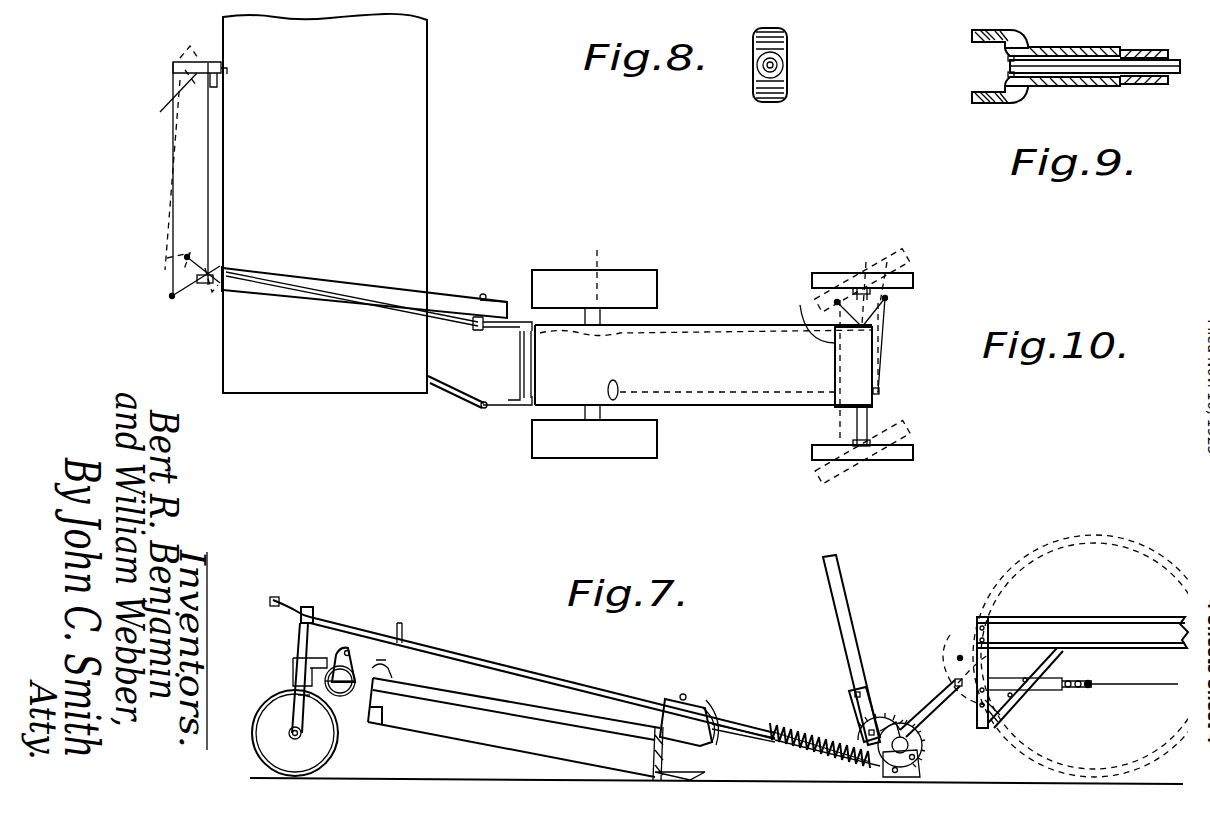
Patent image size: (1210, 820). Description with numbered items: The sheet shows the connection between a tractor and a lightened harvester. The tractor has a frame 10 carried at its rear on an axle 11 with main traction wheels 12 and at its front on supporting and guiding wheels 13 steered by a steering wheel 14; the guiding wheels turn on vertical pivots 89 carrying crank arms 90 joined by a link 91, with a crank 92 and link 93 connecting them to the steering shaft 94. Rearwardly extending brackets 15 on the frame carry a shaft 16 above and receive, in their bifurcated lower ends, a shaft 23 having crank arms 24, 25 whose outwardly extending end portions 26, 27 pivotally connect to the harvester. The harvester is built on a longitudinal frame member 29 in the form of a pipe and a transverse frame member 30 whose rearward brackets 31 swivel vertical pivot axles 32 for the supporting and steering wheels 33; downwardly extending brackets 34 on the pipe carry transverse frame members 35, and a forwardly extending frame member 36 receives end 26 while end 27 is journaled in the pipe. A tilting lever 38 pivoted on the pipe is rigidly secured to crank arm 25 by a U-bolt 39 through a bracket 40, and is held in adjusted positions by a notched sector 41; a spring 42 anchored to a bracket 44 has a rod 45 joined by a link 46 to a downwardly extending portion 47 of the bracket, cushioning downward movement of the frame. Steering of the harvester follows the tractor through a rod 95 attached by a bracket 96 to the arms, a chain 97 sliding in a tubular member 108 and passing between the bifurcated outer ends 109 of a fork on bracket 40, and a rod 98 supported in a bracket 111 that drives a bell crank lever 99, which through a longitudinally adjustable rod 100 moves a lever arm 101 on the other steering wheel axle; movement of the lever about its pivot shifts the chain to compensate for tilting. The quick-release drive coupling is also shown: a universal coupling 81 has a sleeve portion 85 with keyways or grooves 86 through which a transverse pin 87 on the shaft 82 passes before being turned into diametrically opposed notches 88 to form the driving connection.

In FIG. 10, the frame 10 is at (760, 408).
In FIG. 7, the frame 10 is at (1120, 632).
In FIG. 10, the axle 11 is at (595, 425).
In FIG. 10, the main traction wheels 12 is at (632, 275).
In FIG. 7, the main traction wheels 12 is at (1035, 562).
In FIG. 10, the supporting and guiding wheels 13 is at (905, 281).
In FIG. 10, the steering wheel 14 is at (618, 395).
In FIG. 10, the brackets 15 is at (525, 333).
In FIG. 7, the brackets 15 is at (952, 642).
In FIG. 7, the shaft 16 is at (961, 655).
In FIG. 10, the shaft 23 is at (523, 362).
In FIG. 7, the shaft 23 is at (960, 684).
In FIG. 10, the crank arm 24 is at (521, 403).
In FIG. 10, the crank arm 25 is at (485, 344).
In FIG. 7, the crank arm 25 is at (955, 682).
In FIG. 10, the outwardly extending end portion 26 is at (482, 407).
In FIG. 10, the outwardly extending end portion 27 is at (484, 295).
In FIG. 10, the longitudinal frame member 29 is at (472, 300).
In FIG. 7, the longitudinal frame member 29 is at (748, 727).
In FIG. 10, the transverse frame member 30 is at (208, 150).
In FIG. 7, the transverse frame member 30 is at (346, 650).
In FIG. 7, the brackets 31 is at (293, 660).
In FIG. 10, the vertical pivot axles 32 is at (170, 112).
In FIG. 7, the vertical pivot axles 32 is at (300, 637).
In FIG. 10, the supporting and steering wheels 33 is at (195, 72).
In FIG. 7, the supporting and steering wheels 33 is at (340, 741).
In FIG. 7, the brackets 34 is at (378, 664).
In FIG. 7, the transverse frame members 35 is at (325, 686).
In FIG. 10, the frame member 36 is at (450, 396).
In FIG. 10, the tilting lever 38 is at (508, 303).
In FIG. 7, the tilting lever 38 is at (838, 590).
In FIG. 7, the U-bolt 39 is at (915, 733).
In FIG. 7, the bracket 40 is at (896, 728).
In FIG. 7, the notched sector 41 is at (868, 690).
In FIG. 7, the spring 42 is at (800, 730).
In FIG. 7, the bracket 44 is at (710, 714).
In FIG. 7, the rod 45 is at (875, 767).
In FIG. 7, the link 46 is at (921, 776).
In FIG. 7, the downwardly extending portion 47 is at (922, 750).
In FIG. 8, the universal coupling 81 is at (766, 102).
In FIG. 9, the universal coupling 81 is at (975, 100).
In FIG. 8, the shaft 82 is at (782, 68).
In FIG. 9, the shaft 82 is at (1155, 82).
In FIG. 9, the sleeve portion 85 is at (1100, 50).
In FIG. 8, the keyways or grooves 86 is at (782, 48).
In FIG. 9, the keyways or grooves 86 is at (1060, 75).
In FIG. 8, the transverse pin 87 is at (758, 70).
In FIG. 9, the transverse pin 87 is at (1008, 58).
In FIG. 8, the notches 88 is at (776, 62).
In FIG. 10, the vertical pivots 89 is at (862, 288).
In FIG. 10, the crank arms 90 is at (855, 290).
In FIG. 10, the link 91 is at (802, 312).
In FIG. 10, the crank 92 is at (880, 300).
In FIG. 10, the link 93 is at (880, 345).
In FIG. 10, the steering shaft 94 is at (880, 392).
In FIG. 10, the rod 95 is at (733, 328).
In FIG. 7, the rod 95 is at (1138, 689).
In FIG. 10, the bracket 96 is at (878, 298).
In FIG. 10, the chain 97 is at (595, 265).
In FIG. 10, the rod 98 is at (438, 316).
In FIG. 7, the rod 98 is at (490, 667).
In FIG. 10, the bell crank lever 99 is at (172, 293).
In FIG. 7, the bell crank lever 99 is at (298, 608).
In FIG. 10, the longitudinally adjustable rod 100 is at (170, 210).
In FIG. 7, the longitudinally adjustable rod 100 is at (272, 596).
In FIG. 10, the lever arm 101 is at (178, 70).
In FIG. 7, the tubular member 108 is at (1045, 683).
In FIG. 7, the bifurcated outer ends 109 is at (885, 717).
In FIG. 10, the bracket 111 is at (220, 289).
In FIG. 7, the bracket 111 is at (403, 630).